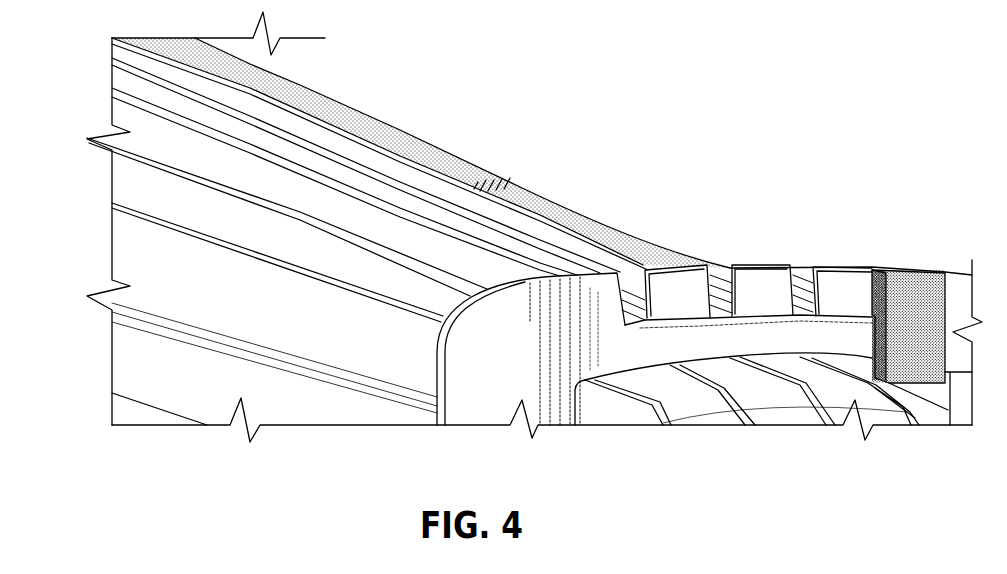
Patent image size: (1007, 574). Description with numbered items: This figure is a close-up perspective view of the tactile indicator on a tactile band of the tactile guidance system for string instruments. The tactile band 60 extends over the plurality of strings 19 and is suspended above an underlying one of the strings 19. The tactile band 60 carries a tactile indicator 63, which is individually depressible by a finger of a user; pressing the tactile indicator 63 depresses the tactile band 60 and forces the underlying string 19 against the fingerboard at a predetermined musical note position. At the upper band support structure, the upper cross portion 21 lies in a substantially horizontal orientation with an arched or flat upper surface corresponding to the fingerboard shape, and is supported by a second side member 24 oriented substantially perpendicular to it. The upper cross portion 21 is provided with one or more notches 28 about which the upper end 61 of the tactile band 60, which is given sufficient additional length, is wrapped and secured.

The strings 19 is at (912, 418).
The upper cross portion 21 is at (573, 303).
The second side member 24 is at (462, 398).
The notches 28 is at (802, 283).
The tactile band 60 is at (423, 131).
The upper end 61 is at (558, 215).
The tactile indicator 63 is at (502, 183).